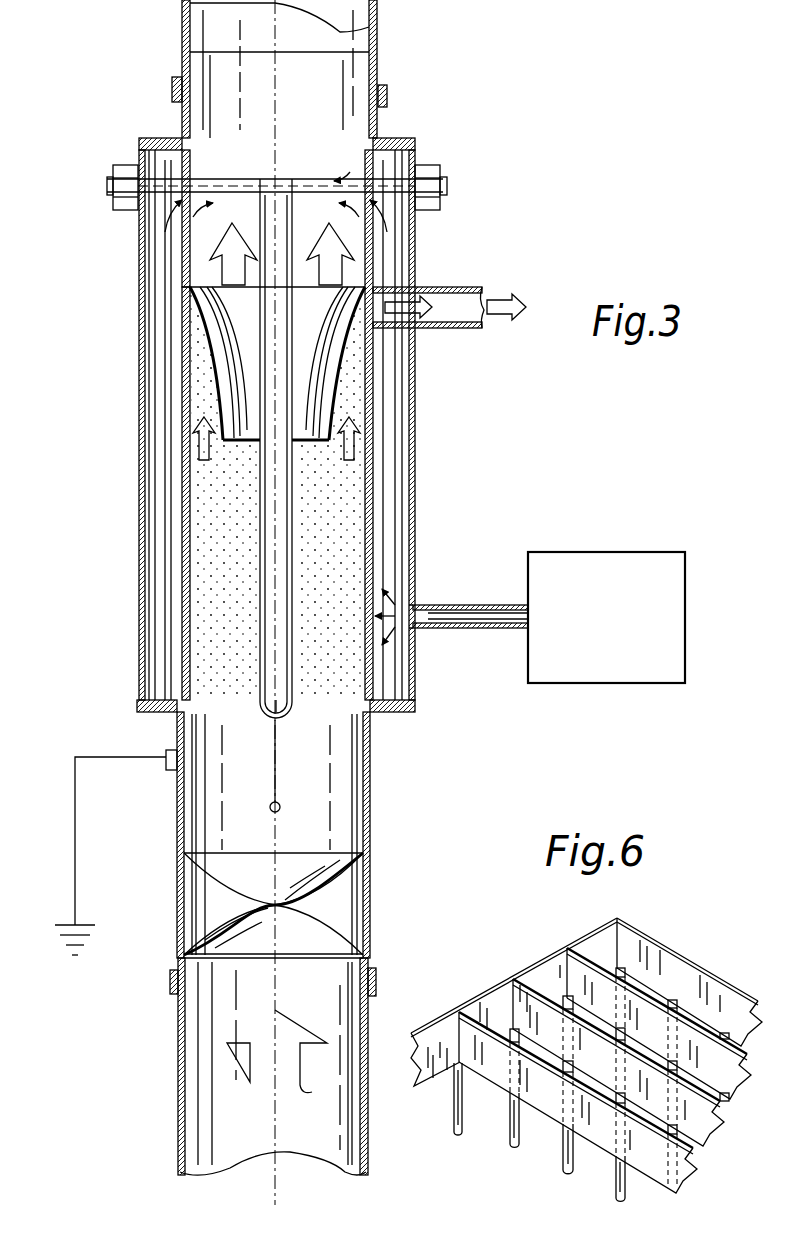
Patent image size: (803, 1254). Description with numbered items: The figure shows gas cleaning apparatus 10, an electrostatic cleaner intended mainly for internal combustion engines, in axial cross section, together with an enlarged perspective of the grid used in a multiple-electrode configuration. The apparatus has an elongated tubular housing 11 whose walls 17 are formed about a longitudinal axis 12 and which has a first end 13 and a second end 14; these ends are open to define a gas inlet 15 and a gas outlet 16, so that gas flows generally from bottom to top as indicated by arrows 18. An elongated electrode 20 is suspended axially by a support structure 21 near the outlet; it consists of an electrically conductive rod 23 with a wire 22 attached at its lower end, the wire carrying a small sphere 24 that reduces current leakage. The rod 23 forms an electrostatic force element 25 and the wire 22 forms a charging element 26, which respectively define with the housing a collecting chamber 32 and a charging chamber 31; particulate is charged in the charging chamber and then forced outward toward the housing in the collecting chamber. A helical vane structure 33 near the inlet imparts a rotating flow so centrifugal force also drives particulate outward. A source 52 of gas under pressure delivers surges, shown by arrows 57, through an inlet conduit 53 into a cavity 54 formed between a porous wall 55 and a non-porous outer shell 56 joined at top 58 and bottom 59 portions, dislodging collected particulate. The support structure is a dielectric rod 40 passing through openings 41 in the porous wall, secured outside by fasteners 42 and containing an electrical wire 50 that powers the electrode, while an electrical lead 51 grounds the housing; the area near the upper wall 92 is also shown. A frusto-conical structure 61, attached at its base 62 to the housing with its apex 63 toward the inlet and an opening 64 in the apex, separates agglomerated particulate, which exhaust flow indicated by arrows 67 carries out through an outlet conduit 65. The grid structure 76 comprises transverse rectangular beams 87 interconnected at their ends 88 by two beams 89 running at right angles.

In FIG. 3, the gas cleaning apparatus 10 is at (442, 120).
In FIG. 3, the tubular housing 11 is at (175, 803).
In FIG. 3, the longitudinal axis 12 is at (280, 90).
In FIG. 3, the first end 13 is at (180, 1150).
In FIG. 3, the second end 14 is at (183, 25).
In FIG. 3, the gas inlet 15 is at (232, 1170).
In FIG. 3, the gas outlet 16 is at (308, 30).
In FIG. 3, the walls 17 is at (137, 656).
In FIG. 3, the arrows 18 is at (276, 659).
In FIG. 3, the elongated electrode 20 is at (257, 588).
In FIG. 6, the elongated electrode 20 is at (500, 1142).
In FIG. 3, the support structure 21 is at (304, 178).
In FIG. 3, the wire 22 is at (278, 762).
In FIG. 3, the electrically conductive rod 23 is at (290, 553).
In FIG. 3, the small sphere 24 is at (281, 807).
In FIG. 3, the electrostatic force element 25 is at (294, 598).
In FIG. 3, the charging element 26 is at (272, 790).
In FIG. 3, the charging chamber 31 is at (235, 764).
In FIG. 3, the collecting chamber 32 is at (331, 658).
In FIG. 3, the helical vane structure 33 is at (340, 941).
In FIG. 3, the dielectric rod 40 is at (203, 178).
In FIG. 3, the openings 41 is at (197, 176).
In FIG. 3, the fasteners 42 is at (124, 165).
In FIG. 3, the electrical wire 50 is at (107, 186).
In FIG. 3, the electrical lead 51 is at (110, 757).
In FIG. 3, the source of gas under pressure 52 is at (638, 568).
In FIG. 3, the inlet conduit 53 is at (424, 612).
In FIG. 3, the cavity 54 is at (390, 573).
In FIG. 3, the porous wall 55 is at (374, 531).
In FIG. 3, the non-porous outer shell 56 is at (412, 502).
In FIG. 3, the arrows 57 is at (436, 627).
In FIG. 3, the top portion 58 is at (392, 142).
In FIG. 3, the bottom portion 59 is at (390, 713).
In FIG. 3, the frusto-conical structure 61 is at (217, 374).
In FIG. 3, the base 62 is at (190, 287).
In FIG. 3, the apex 63 is at (248, 448).
In FIG. 3, the opening 64 is at (327, 448).
In FIG. 3, the outlet conduit 65 is at (427, 331).
In FIG. 3, the arrows 67 is at (413, 309).
In FIG. 3, the upper conduit right wall 92 is at (379, 37).
In FIG. 6, the rectangular grid structure 76 is at (665, 938).
In FIG. 6, the transverse rectangular beams 87 is at (650, 1000).
In FIG. 6, the ends 88 is at (570, 950).
In FIG. 6, the beams 89 is at (480, 1003).